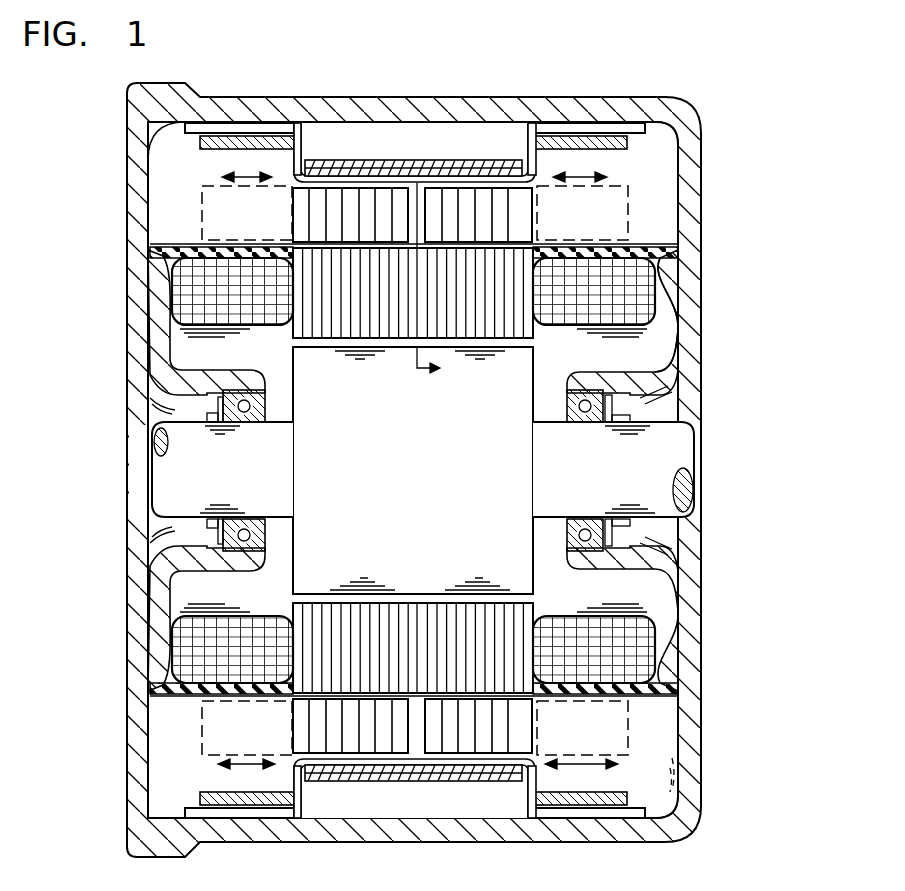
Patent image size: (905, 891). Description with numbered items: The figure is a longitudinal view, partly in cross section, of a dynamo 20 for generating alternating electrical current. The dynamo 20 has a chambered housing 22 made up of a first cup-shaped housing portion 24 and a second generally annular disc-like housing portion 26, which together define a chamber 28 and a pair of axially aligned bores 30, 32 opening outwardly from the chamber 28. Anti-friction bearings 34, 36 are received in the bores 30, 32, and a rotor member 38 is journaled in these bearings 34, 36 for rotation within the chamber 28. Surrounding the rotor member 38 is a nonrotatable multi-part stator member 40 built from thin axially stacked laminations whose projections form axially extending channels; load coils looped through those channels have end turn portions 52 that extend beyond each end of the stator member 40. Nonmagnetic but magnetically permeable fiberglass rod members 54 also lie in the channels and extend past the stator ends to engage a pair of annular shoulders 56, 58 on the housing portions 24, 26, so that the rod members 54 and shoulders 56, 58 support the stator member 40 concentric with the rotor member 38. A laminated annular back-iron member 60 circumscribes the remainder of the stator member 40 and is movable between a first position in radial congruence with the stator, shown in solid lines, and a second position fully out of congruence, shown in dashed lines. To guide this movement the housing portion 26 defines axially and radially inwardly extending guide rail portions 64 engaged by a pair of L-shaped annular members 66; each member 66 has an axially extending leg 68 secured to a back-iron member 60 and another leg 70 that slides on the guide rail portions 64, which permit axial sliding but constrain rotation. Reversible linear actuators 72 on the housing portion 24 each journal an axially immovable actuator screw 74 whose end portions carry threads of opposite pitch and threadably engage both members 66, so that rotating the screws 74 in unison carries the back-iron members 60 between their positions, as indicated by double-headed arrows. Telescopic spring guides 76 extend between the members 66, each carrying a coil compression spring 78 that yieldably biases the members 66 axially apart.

The dynamo 20 is at (712, 152).
The chambered housing 22 is at (705, 250).
The first cup-shaped housing portion 24 is at (565, 108).
The second generally annular disc-like housing portion 26 is at (140, 186).
The chamber 28 is at (639, 204).
The bore 30 is at (630, 420).
The bore 32 is at (243, 410).
The anti-friction bearing 34 is at (592, 519).
The anti-friction bearing 36 is at (250, 425).
The rotor member 38 is at (392, 454).
The stator member 40 is at (652, 222).
The end turn portions 52 is at (185, 297).
The fiberglass rod members 54 is at (155, 232).
The annular shoulder 56 is at (680, 272).
The annular shoulder 58 is at (150, 253).
The laminated annular back-iron member 60 is at (220, 205).
The guide rail portions 64 is at (320, 126).
The L-shaped annular members 66 is at (295, 783).
The axially extending leg 68 is at (352, 781).
The other leg 70 is at (298, 818).
The reversible linear actuators 72 is at (399, 815).
The actuator screw 74 is at (230, 148).
The telescopic spring guides 76 is at (352, 163).
The coil compression spring 78 is at (480, 168).